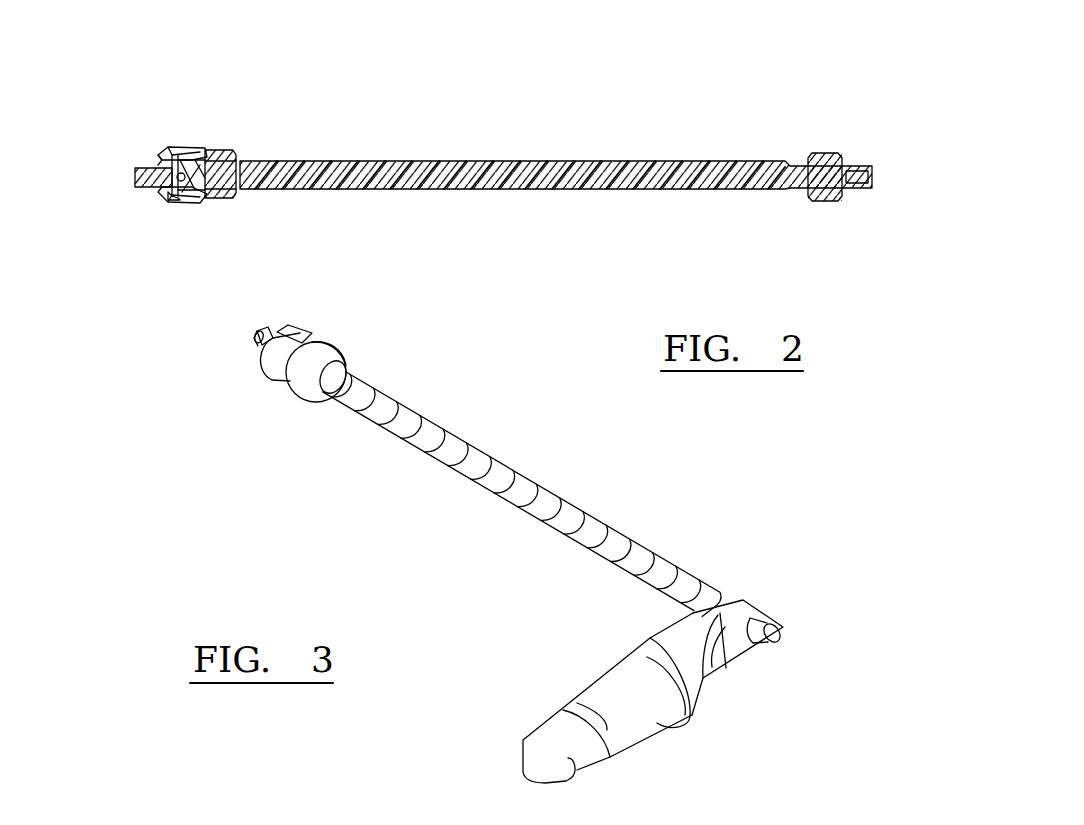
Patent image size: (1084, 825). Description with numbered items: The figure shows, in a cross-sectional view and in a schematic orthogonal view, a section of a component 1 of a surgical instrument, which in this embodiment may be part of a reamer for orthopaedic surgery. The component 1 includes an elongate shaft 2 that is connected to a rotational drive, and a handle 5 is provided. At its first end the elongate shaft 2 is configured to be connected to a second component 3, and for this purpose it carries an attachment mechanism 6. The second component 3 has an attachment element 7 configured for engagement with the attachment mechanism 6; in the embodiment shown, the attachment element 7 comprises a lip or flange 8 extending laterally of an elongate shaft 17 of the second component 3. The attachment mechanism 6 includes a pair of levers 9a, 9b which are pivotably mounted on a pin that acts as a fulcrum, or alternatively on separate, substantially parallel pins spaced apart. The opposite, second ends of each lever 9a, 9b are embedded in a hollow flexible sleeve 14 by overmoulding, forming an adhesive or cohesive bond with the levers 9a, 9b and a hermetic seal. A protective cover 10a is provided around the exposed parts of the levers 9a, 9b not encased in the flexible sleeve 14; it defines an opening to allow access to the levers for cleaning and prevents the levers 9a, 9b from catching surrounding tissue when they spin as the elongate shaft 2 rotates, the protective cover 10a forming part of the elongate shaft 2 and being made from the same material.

In FIG. 2, the component 1 is at (613, 136).
In FIG. 3, the component 1 is at (611, 501).
In FIG. 2, the elongate shaft 2 is at (303, 163).
In FIG. 3, the elongate shaft 2 is at (487, 467).
In FIG. 2, the second component 3 is at (137, 187).
In FIG. 3, the second component 3 is at (250, 367).
In FIG. 2, the handle 5 is at (827, 153).
In FIG. 3, the handle 5 is at (665, 728).
In FIG. 3, the attachment mechanism 6 is at (350, 344).
In FIG. 2, the attachment element 7 is at (149, 163).
In FIG. 2, the lip or flange 8 is at (173, 205).
In FIG. 2, the lever 9a is at (197, 147).
In FIG. 3, the lever 9a is at (284, 323).
In FIG. 2, the lever 9b is at (193, 207).
In FIG. 3, the protective cover 10a is at (300, 330).
In FIG. 2, the hollow flexible sleeve 14 is at (227, 148).
In FIG. 3, the hollow flexible sleeve 14 is at (300, 392).
In FIG. 2, the elongate shaft 17 is at (137, 172).
In FIG. 3, the elongate shaft 17 is at (258, 342).